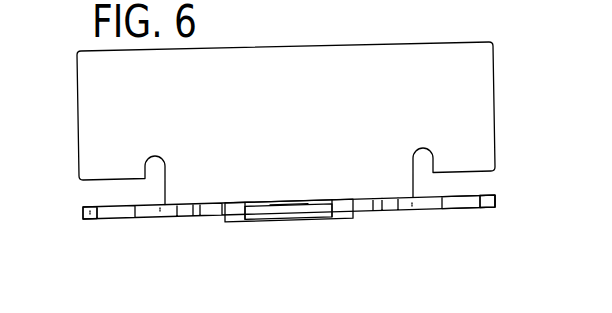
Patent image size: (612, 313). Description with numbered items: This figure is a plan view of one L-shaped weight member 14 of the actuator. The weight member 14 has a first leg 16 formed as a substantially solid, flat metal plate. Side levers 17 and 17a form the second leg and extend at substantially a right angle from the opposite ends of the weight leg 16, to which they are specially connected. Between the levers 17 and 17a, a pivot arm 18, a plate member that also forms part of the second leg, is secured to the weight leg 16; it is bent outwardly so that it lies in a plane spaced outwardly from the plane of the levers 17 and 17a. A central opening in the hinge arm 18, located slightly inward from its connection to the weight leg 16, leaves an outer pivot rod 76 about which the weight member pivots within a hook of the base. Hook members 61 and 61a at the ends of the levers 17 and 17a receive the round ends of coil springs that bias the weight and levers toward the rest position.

The weight member 14 is at (334, 42).
The first leg 16 is at (290, 127).
The side lever 17 is at (113, 216).
The side lever 17a is at (462, 211).
The pivot arm 18 is at (255, 227).
The outer pivot rod 76 is at (282, 219).
The hook member 61 is at (82, 212).
The hook member 61a is at (496, 201).